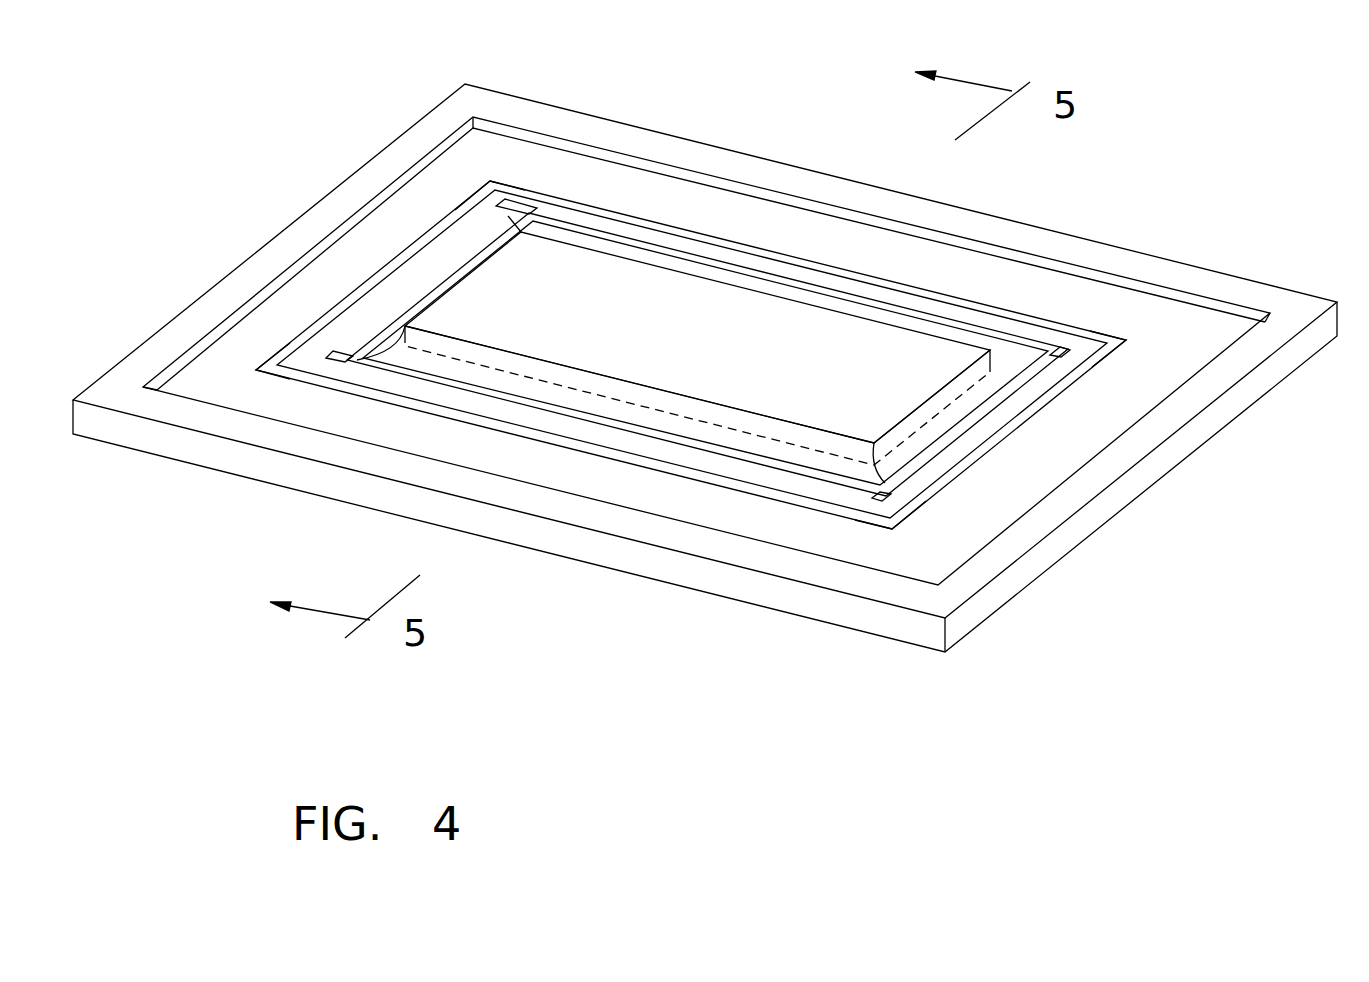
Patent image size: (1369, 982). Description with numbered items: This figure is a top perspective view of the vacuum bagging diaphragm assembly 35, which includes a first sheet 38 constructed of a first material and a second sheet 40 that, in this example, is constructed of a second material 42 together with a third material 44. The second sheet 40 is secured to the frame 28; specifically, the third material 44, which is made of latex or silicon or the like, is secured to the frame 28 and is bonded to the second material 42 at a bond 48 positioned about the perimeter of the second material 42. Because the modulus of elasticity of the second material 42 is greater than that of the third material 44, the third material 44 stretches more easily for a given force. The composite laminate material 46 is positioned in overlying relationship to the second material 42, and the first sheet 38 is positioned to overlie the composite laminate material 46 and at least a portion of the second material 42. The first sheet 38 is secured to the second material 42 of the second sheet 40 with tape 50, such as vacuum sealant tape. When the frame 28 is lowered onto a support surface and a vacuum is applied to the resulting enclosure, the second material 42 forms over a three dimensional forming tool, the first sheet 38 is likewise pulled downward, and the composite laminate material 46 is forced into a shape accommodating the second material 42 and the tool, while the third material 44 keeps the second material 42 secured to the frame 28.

The frame 28 is at (858, 193).
The third material 44 is at (543, 160).
The second sheet 40 is at (430, 236).
The second material 42 is at (388, 295).
The bond 48 is at (282, 350).
The tape 50 is at (477, 250).
The vacuum bagging diaphragm assembly 35 is at (693, 284).
The first sheet 38 is at (892, 360).
The composite laminate material 46 is at (607, 380).